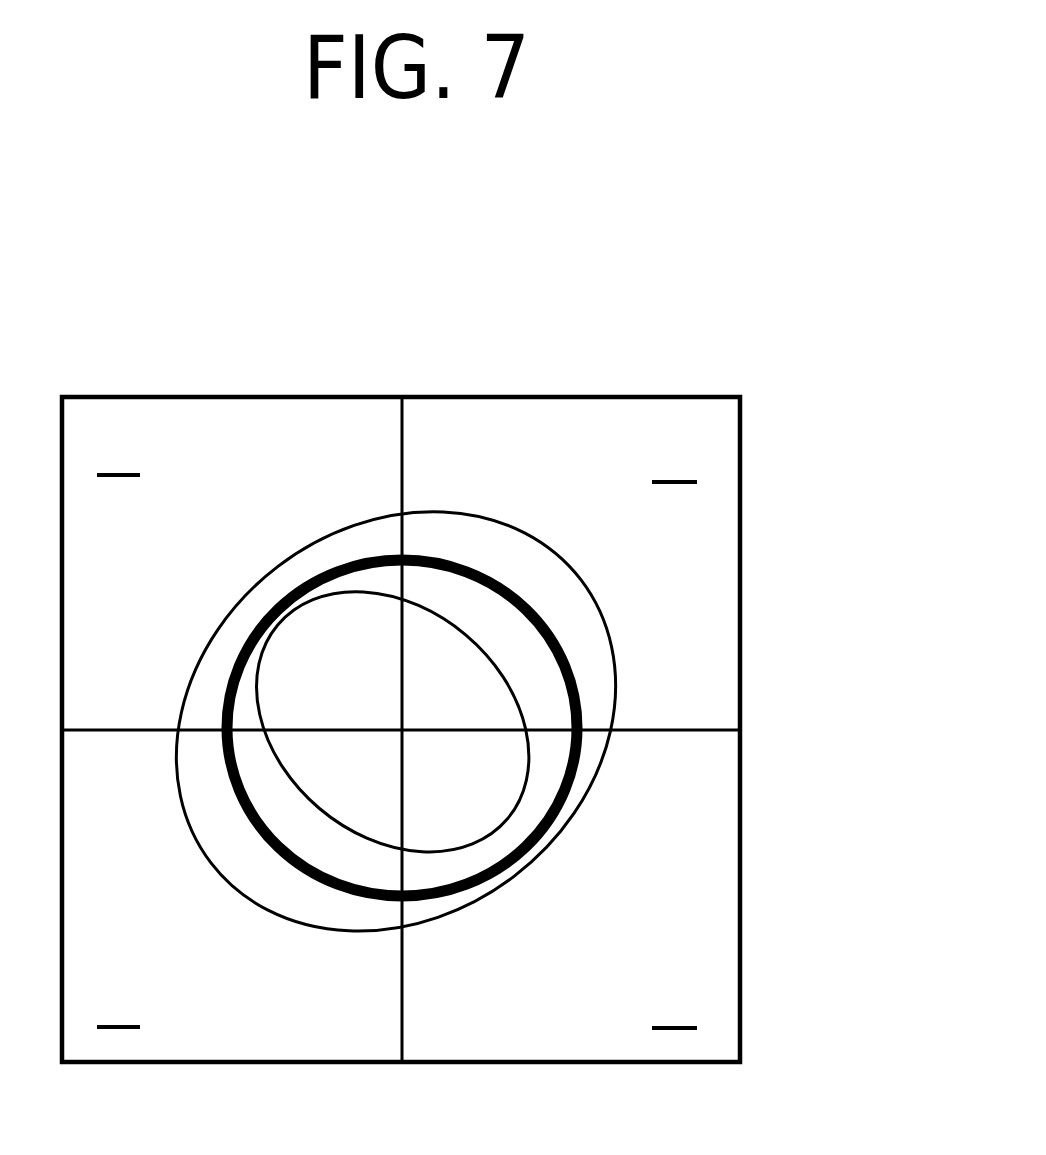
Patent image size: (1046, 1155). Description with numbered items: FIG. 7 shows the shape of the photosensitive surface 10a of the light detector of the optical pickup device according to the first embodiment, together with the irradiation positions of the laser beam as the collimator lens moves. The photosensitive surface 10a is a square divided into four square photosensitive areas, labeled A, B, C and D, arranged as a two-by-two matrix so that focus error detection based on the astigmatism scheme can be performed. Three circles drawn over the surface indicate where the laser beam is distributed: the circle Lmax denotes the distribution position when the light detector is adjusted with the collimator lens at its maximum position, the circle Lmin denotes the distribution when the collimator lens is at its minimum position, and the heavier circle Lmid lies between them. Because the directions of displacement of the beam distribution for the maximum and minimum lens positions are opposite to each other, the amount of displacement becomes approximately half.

The photosensitive surface 10a is at (458, 397).
The position of distribution of the laser beam at position Pmax Lmax is at (593, 620).
The position of distribution of the laser beam at the intermediate collimator lens p Lmid is at (580, 697).
The position of distribution of the laser beam at position Pmin Lmin is at (522, 787).